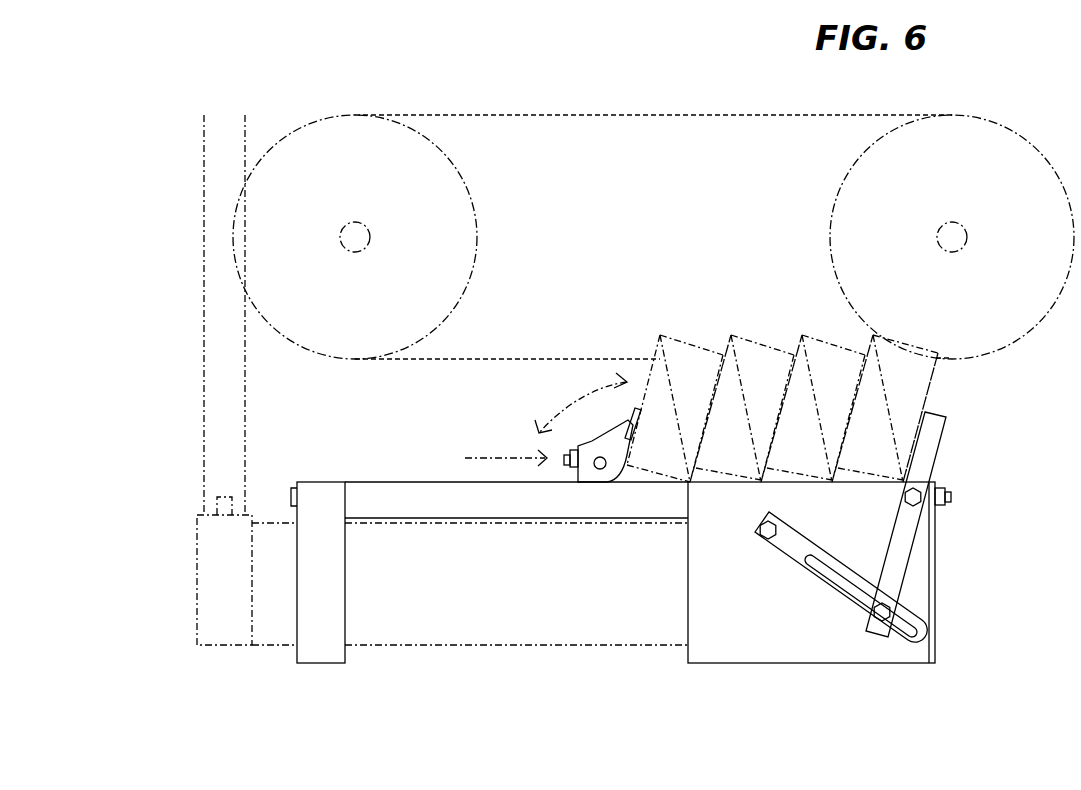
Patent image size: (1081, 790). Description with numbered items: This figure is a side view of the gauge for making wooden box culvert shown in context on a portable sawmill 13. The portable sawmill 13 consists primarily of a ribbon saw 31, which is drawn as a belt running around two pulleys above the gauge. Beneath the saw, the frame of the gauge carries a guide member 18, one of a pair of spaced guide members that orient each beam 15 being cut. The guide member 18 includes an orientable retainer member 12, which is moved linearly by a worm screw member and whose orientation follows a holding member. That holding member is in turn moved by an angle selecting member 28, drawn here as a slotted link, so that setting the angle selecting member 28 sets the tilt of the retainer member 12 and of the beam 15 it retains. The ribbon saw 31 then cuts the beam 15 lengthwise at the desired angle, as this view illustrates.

The portable sawmill 13 is at (235, 20).
The ribbon saw 31 is at (700, 183).
The guide member 18 is at (657, 510).
The retainer member 12 is at (610, 445).
The beam 15 is at (890, 397).
The angle selecting member 28 is at (797, 573).